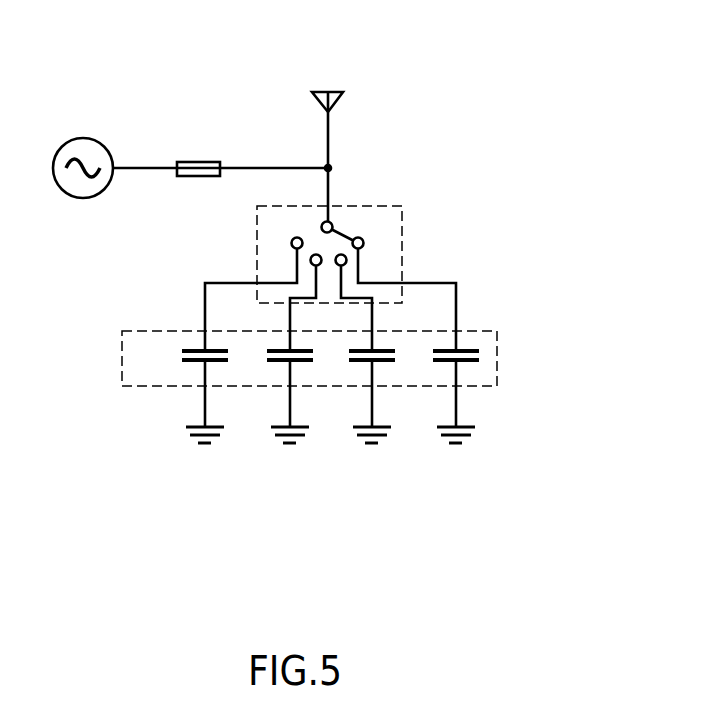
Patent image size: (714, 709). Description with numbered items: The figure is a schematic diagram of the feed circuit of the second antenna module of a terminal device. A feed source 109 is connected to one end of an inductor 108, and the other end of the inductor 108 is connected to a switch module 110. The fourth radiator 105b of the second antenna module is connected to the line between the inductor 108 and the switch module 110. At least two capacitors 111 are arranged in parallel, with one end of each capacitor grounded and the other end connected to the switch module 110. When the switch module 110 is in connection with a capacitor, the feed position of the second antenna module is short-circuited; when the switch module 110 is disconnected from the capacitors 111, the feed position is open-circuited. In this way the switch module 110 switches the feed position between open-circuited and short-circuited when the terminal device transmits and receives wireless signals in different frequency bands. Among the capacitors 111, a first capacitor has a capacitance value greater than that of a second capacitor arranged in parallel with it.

The feed source 109 is at (91, 139).
The inductor 108 is at (201, 161).
The fourth radiator 105b is at (343, 92).
The switch module 110 is at (403, 252).
The capacitors 111 is at (497, 357).